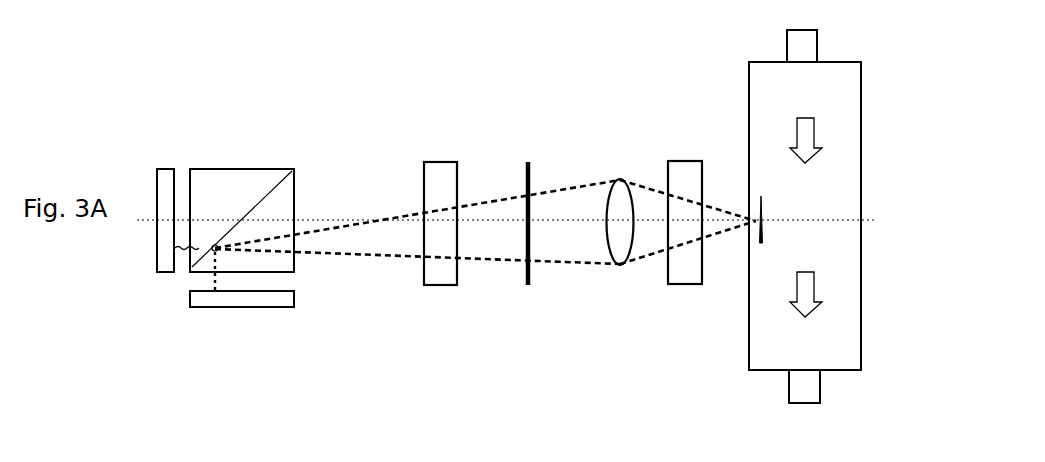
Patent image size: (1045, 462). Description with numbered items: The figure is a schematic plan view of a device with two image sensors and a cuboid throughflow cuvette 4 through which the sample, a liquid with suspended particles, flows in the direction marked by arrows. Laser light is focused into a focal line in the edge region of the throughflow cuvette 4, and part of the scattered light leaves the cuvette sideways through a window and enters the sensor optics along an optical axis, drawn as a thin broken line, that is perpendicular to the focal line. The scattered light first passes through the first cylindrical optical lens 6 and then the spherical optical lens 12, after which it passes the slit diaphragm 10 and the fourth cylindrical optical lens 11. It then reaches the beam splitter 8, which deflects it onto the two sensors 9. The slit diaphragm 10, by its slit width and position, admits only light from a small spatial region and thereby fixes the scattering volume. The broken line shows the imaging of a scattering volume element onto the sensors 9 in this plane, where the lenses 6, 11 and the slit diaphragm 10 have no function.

The throughflow cuvette 4 is at (870, 190).
The first cylindrical optical lens 6 is at (692, 148).
The beam splitter 8 is at (238, 160).
The light-sensitive sensors 9 is at (184, 303).
The slit diaphragm 10 is at (545, 287).
The fourth cylindrical optical lens 11 is at (446, 300).
The spherical optical lens 12 is at (613, 167).